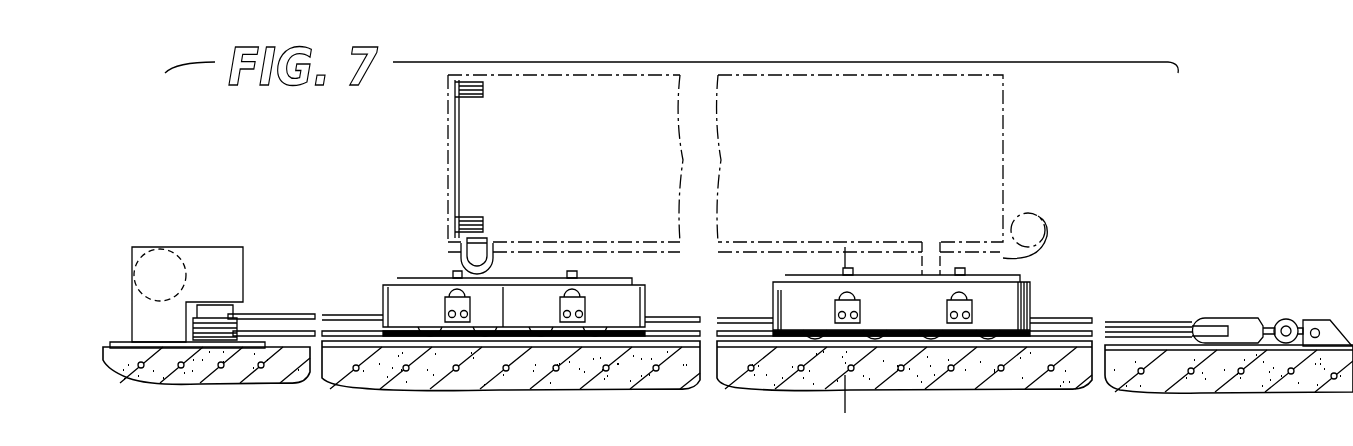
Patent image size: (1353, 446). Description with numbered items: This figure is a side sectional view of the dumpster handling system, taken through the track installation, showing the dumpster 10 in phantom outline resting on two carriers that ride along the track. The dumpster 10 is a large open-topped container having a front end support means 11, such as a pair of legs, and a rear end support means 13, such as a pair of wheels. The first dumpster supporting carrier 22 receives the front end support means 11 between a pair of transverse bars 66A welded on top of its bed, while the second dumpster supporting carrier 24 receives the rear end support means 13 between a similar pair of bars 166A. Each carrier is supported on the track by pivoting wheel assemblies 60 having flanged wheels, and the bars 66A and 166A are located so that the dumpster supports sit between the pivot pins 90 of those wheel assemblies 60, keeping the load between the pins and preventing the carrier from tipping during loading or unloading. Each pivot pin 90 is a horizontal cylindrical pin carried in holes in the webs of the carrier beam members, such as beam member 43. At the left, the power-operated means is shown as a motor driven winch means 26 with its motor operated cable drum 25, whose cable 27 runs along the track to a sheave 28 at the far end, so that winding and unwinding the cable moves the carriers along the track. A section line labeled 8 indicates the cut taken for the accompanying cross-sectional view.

The section line 8- 8 is at (878, 253).
The dumpster 10 is at (1010, 136).
The front end support means 11 is at (933, 242).
The rear end support means 13 is at (476, 260).
The first dumpster supporting carrier 22 is at (1041, 281).
The second dumpster supporting carrier 24 is at (378, 284).
The motor operated cable drum 25 is at (207, 306).
The motor driven winch means 26 is at (266, 310).
The cable 27 is at (695, 323).
The sheave 28 is at (1214, 318).
The beam member 43 is at (1034, 304).
The wheel assembly 60 is at (476, 301).
The bars 66A is at (812, 275).
The pivot pin 90 is at (444, 298).
The bars 166A is at (453, 272).